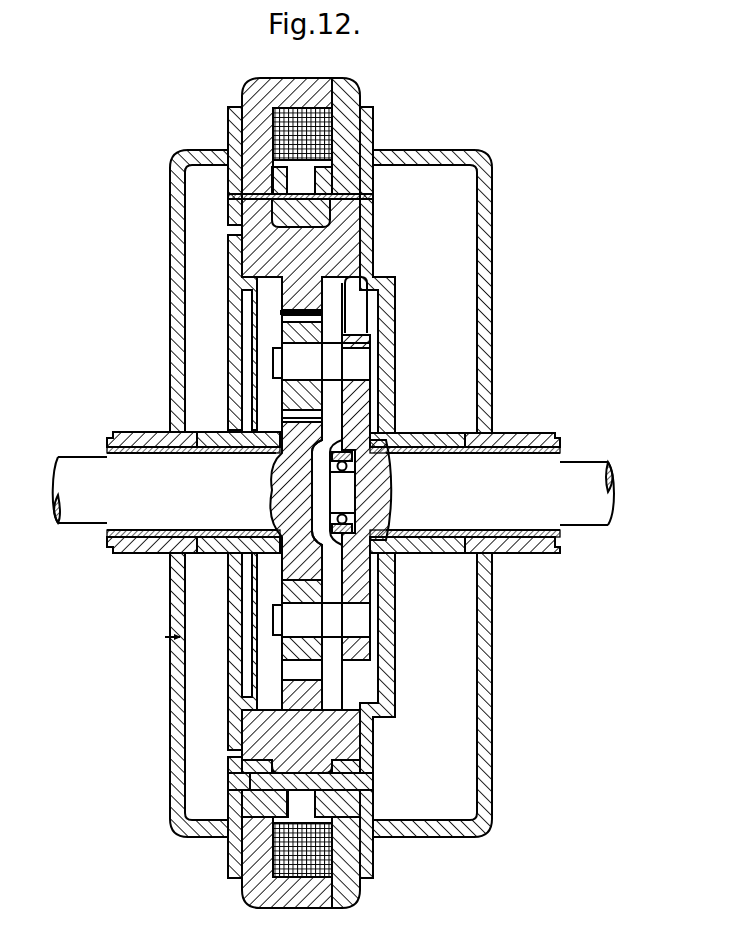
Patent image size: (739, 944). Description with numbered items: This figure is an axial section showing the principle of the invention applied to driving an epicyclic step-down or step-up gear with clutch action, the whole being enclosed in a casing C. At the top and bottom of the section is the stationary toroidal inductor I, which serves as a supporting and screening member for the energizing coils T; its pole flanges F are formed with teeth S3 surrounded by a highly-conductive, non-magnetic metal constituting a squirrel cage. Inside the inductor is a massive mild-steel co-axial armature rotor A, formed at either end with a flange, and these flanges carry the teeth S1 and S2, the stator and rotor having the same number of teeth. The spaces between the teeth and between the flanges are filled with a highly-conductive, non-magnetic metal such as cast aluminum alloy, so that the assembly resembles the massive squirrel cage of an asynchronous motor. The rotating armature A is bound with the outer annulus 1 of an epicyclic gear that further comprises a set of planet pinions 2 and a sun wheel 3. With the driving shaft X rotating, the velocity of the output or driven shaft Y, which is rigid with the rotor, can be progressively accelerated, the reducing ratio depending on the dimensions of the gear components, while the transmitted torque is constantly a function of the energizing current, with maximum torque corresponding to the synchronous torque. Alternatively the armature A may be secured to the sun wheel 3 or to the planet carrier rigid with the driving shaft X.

The stationary toroidal inductor I is at (285, 80).
The pole flanges F is at (362, 112).
The energizing coils T is at (323, 138).
The casing C is at (178, 182).
The armature rotor A is at (345, 246).
The outer annulus 1 is at (290, 300).
The planet pinions 2 is at (290, 400).
The sun wheel 3 is at (286, 555).
The driven shaft Y is at (164, 491).
The driving shaft X is at (500, 491).
The teeth S1 is at (246, 777).
The teeth S2 is at (352, 780).
The teeth S3 is at (353, 803).